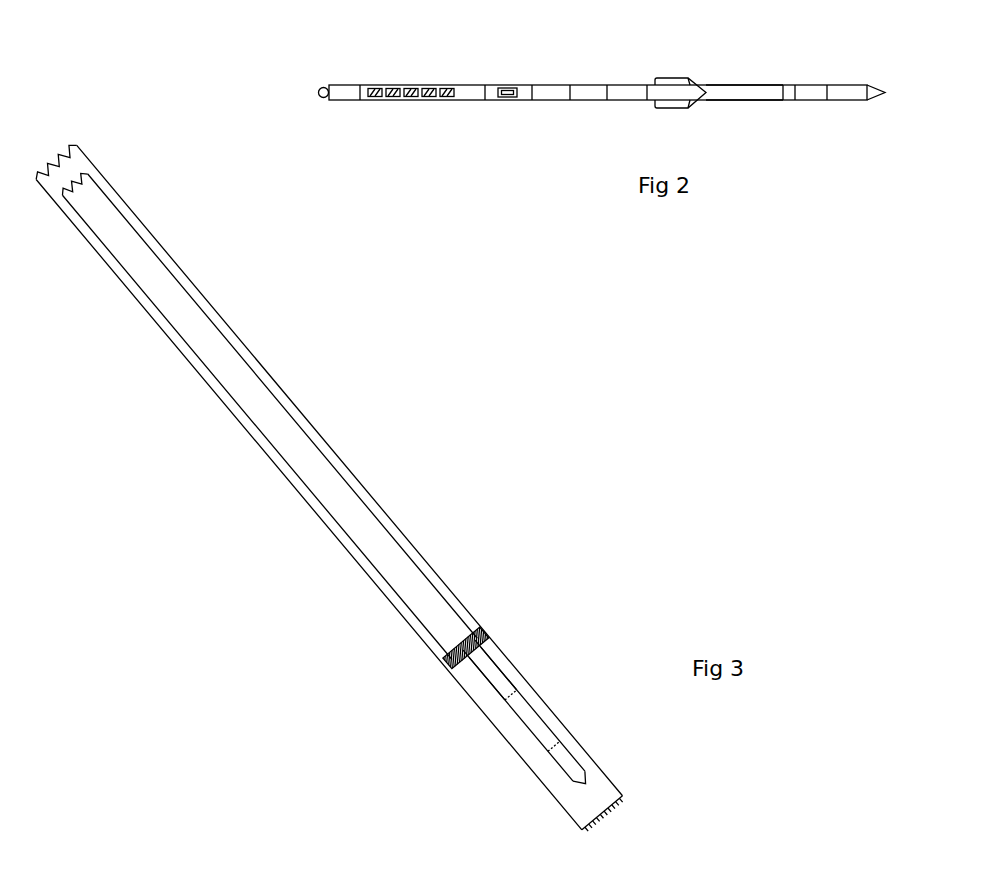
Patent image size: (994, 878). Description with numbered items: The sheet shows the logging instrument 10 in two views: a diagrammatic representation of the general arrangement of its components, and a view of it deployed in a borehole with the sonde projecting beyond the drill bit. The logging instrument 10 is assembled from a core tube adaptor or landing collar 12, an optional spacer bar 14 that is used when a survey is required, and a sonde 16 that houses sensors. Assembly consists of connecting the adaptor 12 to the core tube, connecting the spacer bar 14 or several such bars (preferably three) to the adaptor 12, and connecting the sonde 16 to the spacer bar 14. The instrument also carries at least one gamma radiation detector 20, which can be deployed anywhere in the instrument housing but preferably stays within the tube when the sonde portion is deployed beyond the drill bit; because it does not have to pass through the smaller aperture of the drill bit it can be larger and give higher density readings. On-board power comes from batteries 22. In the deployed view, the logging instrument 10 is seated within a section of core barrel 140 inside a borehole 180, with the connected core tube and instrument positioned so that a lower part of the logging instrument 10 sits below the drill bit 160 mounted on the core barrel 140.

In FIG. 2, the logging instrument 10 is at (551, 84).
In FIG. 3, the logging instrument 10 is at (537, 712).
In FIG. 2, the core tube adaptor or landing collar 12 is at (655, 80).
In FIG. 2, the spacer bar 14 is at (745, 84).
In FIG. 3, the spacer bar 14 is at (495, 662).
In FIG. 2, the sonde 16 is at (835, 101).
In FIG. 3, the sonde 16 is at (558, 770).
In FIG. 2, the gamma radiation detector 20 is at (510, 101).
In FIG. 2, the batteries 22 is at (400, 101).
In FIG. 3, the core barrel 140 is at (199, 318).
In FIG. 3, the drill bit 160 is at (447, 660).
In FIG. 3, the borehole 180 is at (212, 398).